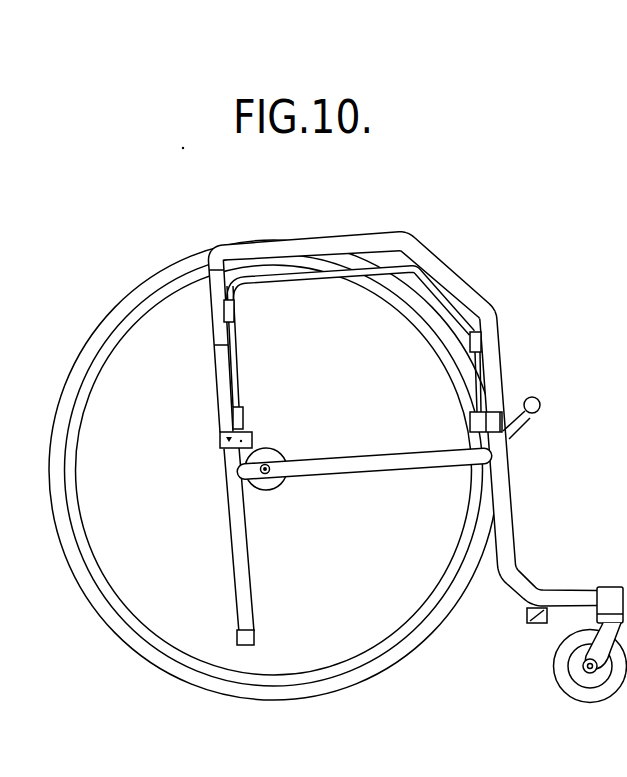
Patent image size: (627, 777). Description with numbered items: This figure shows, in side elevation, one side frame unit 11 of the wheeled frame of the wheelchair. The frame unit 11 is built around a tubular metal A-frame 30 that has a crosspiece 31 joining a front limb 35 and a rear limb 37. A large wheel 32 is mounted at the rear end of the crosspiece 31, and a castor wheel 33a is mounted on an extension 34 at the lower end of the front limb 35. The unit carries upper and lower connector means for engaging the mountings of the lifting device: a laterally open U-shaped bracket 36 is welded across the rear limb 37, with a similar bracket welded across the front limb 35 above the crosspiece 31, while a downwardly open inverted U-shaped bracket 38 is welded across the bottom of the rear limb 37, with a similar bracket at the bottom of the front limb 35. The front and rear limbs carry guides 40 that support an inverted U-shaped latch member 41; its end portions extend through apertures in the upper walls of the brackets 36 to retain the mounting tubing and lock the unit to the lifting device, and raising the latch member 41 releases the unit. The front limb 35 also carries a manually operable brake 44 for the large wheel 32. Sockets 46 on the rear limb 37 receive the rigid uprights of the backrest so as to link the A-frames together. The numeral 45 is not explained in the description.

The frame unit 11 is at (375, 378).
The tubular metal A-frame 30 is at (425, 253).
The crosspiece 31 is at (347, 463).
The large wheel 32 is at (163, 276).
The castor wheel 33a is at (570, 684).
The extension 34 is at (576, 591).
The front limb 35 is at (505, 498).
The laterally open U-shaped bracket 36 is at (254, 439).
The rear limb 37 is at (238, 566).
The downwardly open inverted U-shaped bracket 38 is at (254, 639).
The guides 40 is at (243, 414).
The inverted U-shaped latch member 41 is at (300, 285).
The manually operable brake 44 is at (527, 428).
The armrest top tube 45 is at (285, 244).
The sockets 46 is at (217, 303).